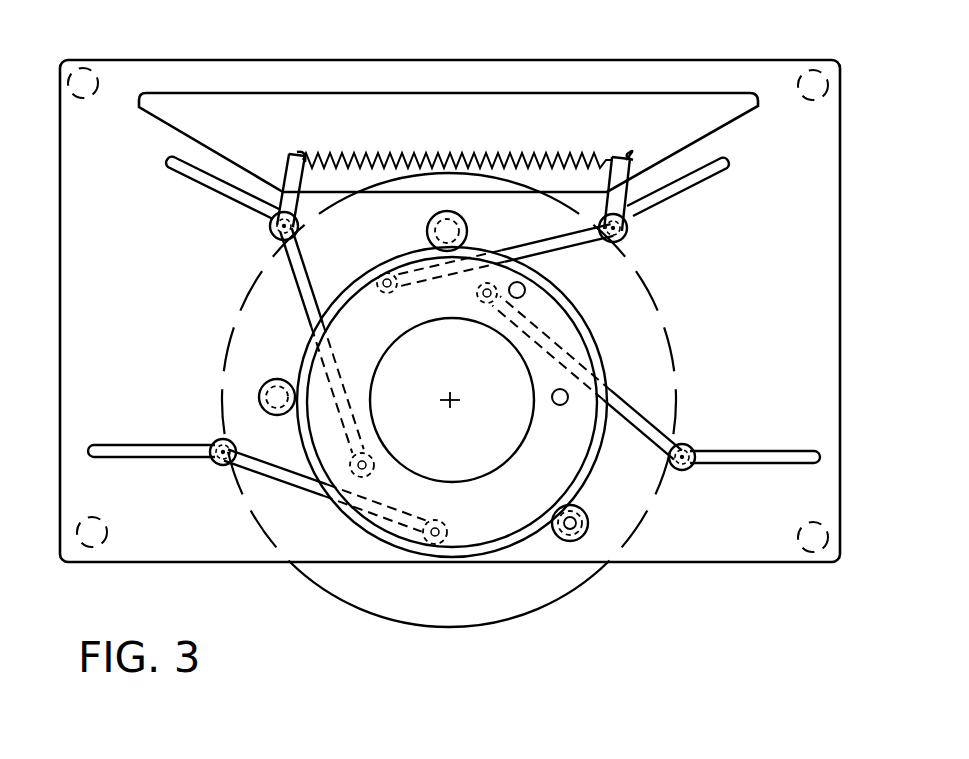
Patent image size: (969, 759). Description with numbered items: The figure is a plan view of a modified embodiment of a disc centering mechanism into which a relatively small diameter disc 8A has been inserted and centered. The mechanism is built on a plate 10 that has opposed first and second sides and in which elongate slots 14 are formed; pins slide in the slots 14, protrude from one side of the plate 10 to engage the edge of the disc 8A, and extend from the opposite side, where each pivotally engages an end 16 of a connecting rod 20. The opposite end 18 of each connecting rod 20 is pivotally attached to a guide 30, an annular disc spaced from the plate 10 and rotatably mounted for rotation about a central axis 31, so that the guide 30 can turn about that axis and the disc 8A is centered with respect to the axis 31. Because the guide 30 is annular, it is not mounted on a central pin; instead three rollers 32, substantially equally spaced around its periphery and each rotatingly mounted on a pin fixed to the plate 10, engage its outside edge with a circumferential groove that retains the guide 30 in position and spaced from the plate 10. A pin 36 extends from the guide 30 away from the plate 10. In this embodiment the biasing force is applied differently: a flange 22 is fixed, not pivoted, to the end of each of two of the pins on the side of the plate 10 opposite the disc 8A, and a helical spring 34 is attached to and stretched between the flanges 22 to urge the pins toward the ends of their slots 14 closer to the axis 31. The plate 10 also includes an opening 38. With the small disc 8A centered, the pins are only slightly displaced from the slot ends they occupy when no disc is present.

The relatively small diameter disc 8A is at (478, 612).
The plate 10 is at (833, 298).
The elongate slots 14 is at (178, 172).
The end of connecting rod 16 is at (227, 472).
The opposite end of connecting rod 18 is at (376, 288).
The connecting rod 20 is at (302, 262).
The flange 22 is at (283, 173).
The guide 30 is at (587, 486).
The central axis 31 is at (455, 400).
The rollers 32 is at (462, 225).
The helical spring 34 is at (462, 156).
The pin 36 is at (526, 296).
The opening 38 is at (393, 105).